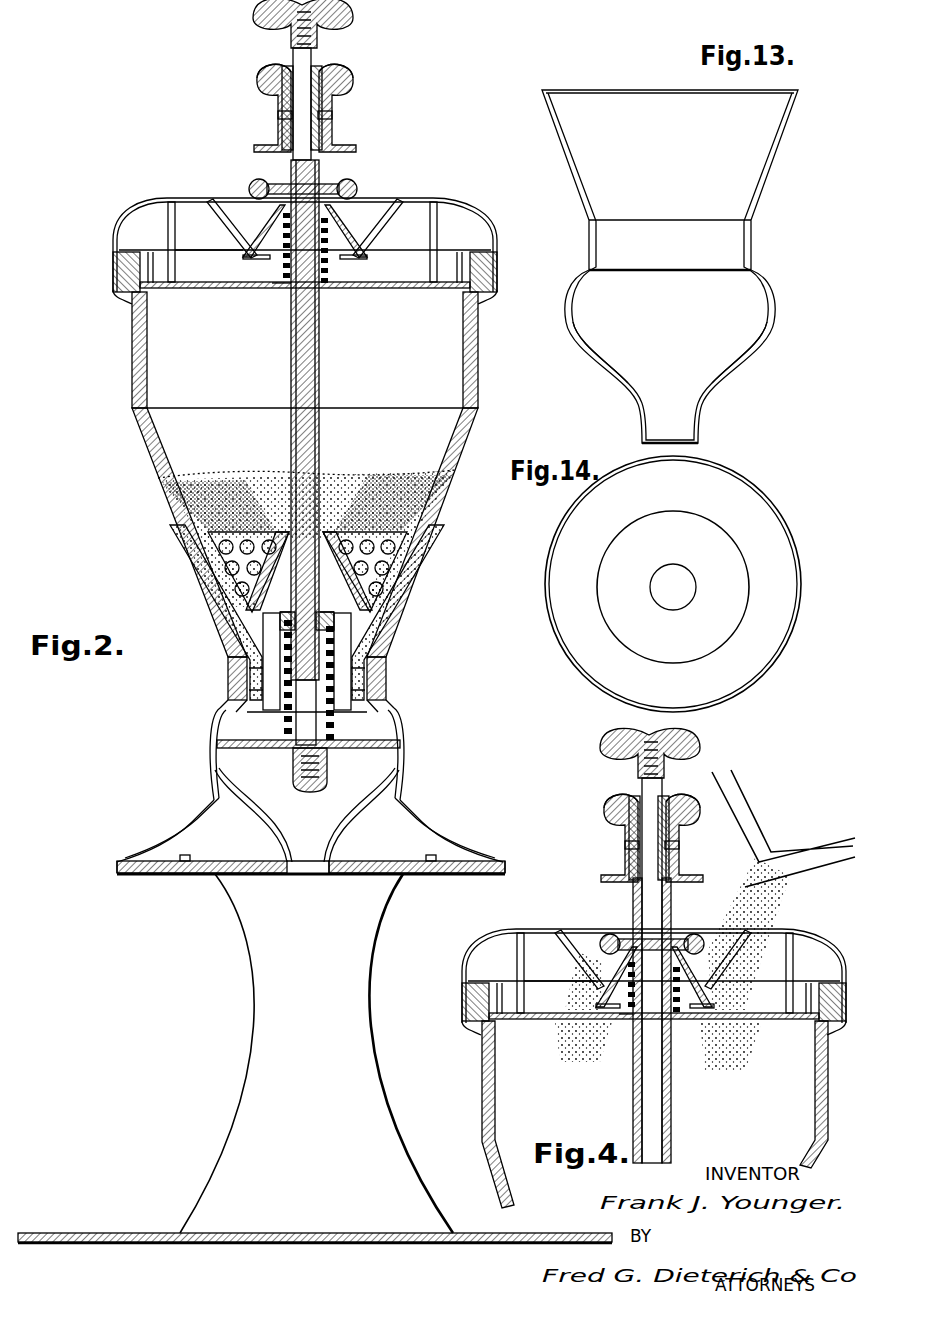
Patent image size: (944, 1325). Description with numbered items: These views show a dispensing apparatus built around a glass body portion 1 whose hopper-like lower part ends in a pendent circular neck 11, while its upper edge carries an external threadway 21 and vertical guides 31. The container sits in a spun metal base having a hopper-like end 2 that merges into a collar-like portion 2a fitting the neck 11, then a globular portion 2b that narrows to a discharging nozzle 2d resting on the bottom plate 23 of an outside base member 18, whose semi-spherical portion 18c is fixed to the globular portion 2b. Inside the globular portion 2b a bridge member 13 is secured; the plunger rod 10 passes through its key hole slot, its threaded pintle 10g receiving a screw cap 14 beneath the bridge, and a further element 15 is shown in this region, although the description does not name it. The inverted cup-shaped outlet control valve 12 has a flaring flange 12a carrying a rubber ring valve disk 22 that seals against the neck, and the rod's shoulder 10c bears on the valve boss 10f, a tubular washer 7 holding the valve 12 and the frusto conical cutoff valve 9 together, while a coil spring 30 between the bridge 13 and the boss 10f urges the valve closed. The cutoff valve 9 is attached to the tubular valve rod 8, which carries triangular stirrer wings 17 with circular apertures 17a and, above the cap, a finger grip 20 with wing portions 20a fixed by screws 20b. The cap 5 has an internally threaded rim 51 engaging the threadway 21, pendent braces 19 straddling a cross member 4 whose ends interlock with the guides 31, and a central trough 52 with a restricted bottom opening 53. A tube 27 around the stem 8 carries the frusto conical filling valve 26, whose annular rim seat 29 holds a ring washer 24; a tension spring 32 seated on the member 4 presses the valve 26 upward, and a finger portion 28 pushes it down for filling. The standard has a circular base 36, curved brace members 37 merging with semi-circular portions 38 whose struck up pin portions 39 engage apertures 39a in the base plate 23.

In FIG. 2, the body portion 1 is at (132, 351).
In FIG. 4, the body portion 1 is at (828, 1075).
In FIG. 2, the hopper-like end 2 is at (210, 590).
In FIG. 13, the hopper-like end 2 is at (570, 162).
In FIG. 14, the hopper-like end 2 is at (799, 598).
In FIG. 2, the annular collar-like portion 2a is at (330, 860).
In FIG. 13, the annular collar-like portion 2a is at (752, 247).
In FIG. 14, the annular collar-like portion 2a is at (677, 565).
In FIG. 2, the globular-like portion 2b is at (398, 720).
In FIG. 13, the globular-like portion 2b is at (769, 320).
In FIG. 13, the discharging nozzle 2d is at (699, 430).
In FIG. 2, the bridge or cross member 4 is at (390, 290).
In FIG. 4, the bridge or cross member 4 is at (538, 1021).
In FIG. 2, the cap 5 is at (447, 203).
In FIG. 4, the cap 5 is at (772, 936).
In FIG. 2, the tubular washer 7 is at (292, 592).
In FIG. 2, the tubular valve rod 8 is at (292, 421).
In FIG. 4, the tubular valve rod 8 is at (666, 889).
In FIG. 2, the cutoff valve 9 is at (336, 545).
In FIG. 2, the plunger rod 10 is at (320, 168).
In FIG. 4, the plunger rod 10 is at (661, 792).
In FIG. 2, the shoulder or seat 10c is at (376, 650).
In FIG. 2, the head portion or boss 10f is at (240, 636).
In FIG. 2, the threaded pintle 10g is at (328, 766).
In FIG. 2, the pendent circular neck 11 is at (231, 681).
In FIG. 2, the outlet control valve 12 is at (392, 630).
In FIG. 2, the flaring flange 12a is at (388, 683).
In FIG. 2, the bridge member 13 is at (216, 760).
In FIG. 2, the screw cap 14 is at (262, 18).
In FIG. 4, the screw cap 14 is at (610, 756).
In FIG. 2, the plate 15 is at (298, 748).
In FIG. 2, the stirrer wings 17 is at (276, 540).
In FIG. 2, the circular apertures 17a is at (394, 550).
In FIG. 2, the sub or outside base member 18 is at (201, 817).
In FIG. 2, the semi-spherical portion 18c is at (404, 752).
In FIG. 2, the vertical metal braces or strips 19 is at (430, 264).
In FIG. 4, the vertical metal braces or strips 19 is at (523, 997).
In FIG. 2, the finger grip 20 is at (281, 104).
In FIG. 4, the finger grip 20 is at (628, 839).
In FIG. 2, the wing portions 20a is at (341, 72).
In FIG. 4, the wing portions 20a is at (620, 802).
In FIG. 2, the screws 20b is at (326, 116).
In FIG. 4, the screws 20b is at (672, 843).
In FIG. 2, the external threadway 21 is at (135, 261).
In FIG. 4, the external threadway 21 is at (466, 1015).
In FIG. 2, the ring valve disk 22 is at (226, 714).
In FIG. 2, the bottom plate 23 is at (392, 866).
In FIG. 2, the ring washer 24 is at (252, 260).
In FIG. 4, the ring washer 24 is at (625, 1022).
In FIG. 2, the filling valve 26 is at (342, 229).
In FIG. 4, the filling valve 26 is at (718, 997).
In FIG. 2, the tube 27 is at (280, 284).
In FIG. 4, the tube 27 is at (635, 1031).
In FIG. 2, the finger portion 28 is at (261, 181).
In FIG. 4, the finger portion 28 is at (610, 934).
In FIG. 2, the annular rim seat 29 is at (270, 250).
In FIG. 2, the coil spring 30 is at (337, 726).
In FIG. 2, the vertical guides 31 is at (312, 256).
In FIG. 4, the vertical guides 31 is at (654, 985).
In FIG. 2, the tension spring 32 is at (329, 272).
In FIG. 4, the tension spring 32 is at (672, 1026).
In FIG. 2, the circular base 36 is at (315, 1227).
In FIG. 2, the brace members 37 is at (262, 1034).
In FIG. 2, the semi-circular portions 38 is at (378, 876).
In FIG. 2, the pin portions 39 is at (184, 868).
In FIG. 2, the apertures 39a is at (187, 858).
In FIG. 2, the internally threaded rim 51 is at (490, 262).
In FIG. 4, the internally threaded rim 51 is at (466, 997).
In FIG. 2, the hopper-like trough 52 is at (380, 236).
In FIG. 4, the hopper-like trough 52 is at (583, 925).
In FIG. 4, the bottom opening 53 is at (722, 977).